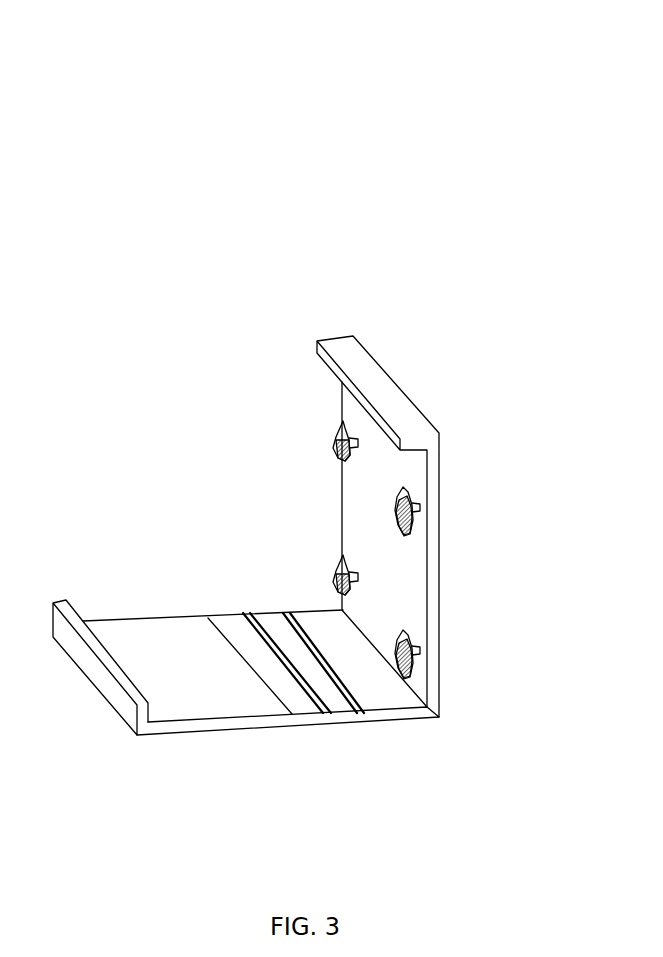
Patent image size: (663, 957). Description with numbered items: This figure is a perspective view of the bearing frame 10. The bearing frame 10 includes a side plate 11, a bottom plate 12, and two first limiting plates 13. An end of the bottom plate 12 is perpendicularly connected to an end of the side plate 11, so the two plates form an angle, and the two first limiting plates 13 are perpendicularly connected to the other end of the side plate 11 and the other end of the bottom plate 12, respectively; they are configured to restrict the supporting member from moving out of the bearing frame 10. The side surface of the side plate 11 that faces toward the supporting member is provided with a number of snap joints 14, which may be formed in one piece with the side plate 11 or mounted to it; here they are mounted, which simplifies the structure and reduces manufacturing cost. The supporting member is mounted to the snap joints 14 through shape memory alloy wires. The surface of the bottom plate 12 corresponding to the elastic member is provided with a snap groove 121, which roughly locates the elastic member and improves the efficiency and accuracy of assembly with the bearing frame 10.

The bearing frame 10 is at (300, 55).
The side plate 11 is at (418, 605).
The bottom plate 12 is at (223, 707).
The snap groove 121 is at (335, 702).
The first limiting plate 13 is at (90, 660).
The snap joint 14 is at (418, 505).